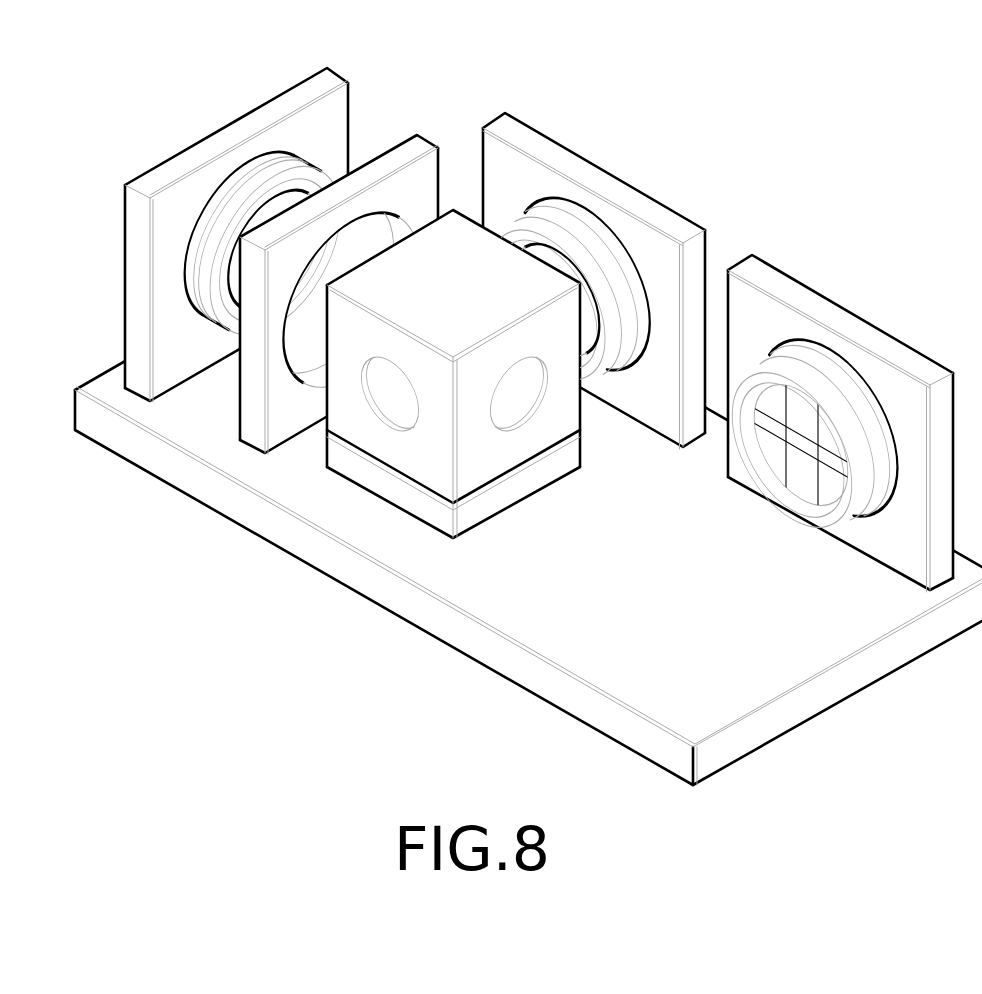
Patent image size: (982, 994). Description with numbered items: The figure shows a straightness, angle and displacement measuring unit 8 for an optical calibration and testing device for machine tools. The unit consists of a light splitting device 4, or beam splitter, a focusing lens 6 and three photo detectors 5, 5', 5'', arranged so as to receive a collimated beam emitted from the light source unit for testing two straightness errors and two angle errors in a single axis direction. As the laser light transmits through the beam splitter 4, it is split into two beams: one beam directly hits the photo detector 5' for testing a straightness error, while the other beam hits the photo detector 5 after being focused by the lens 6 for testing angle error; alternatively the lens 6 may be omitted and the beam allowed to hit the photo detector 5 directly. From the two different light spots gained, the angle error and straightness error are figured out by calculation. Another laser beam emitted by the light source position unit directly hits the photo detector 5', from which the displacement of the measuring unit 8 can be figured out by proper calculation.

The light splitting device 4 is at (515, 450).
The photo detector 5 is at (236, 215).
The photo detector 5' is at (602, 265).
The photo detector 5'' is at (851, 408).
The focusing lens 6 is at (394, 164).
The straightness, angle and displacement measuring unit 8 is at (242, 534).